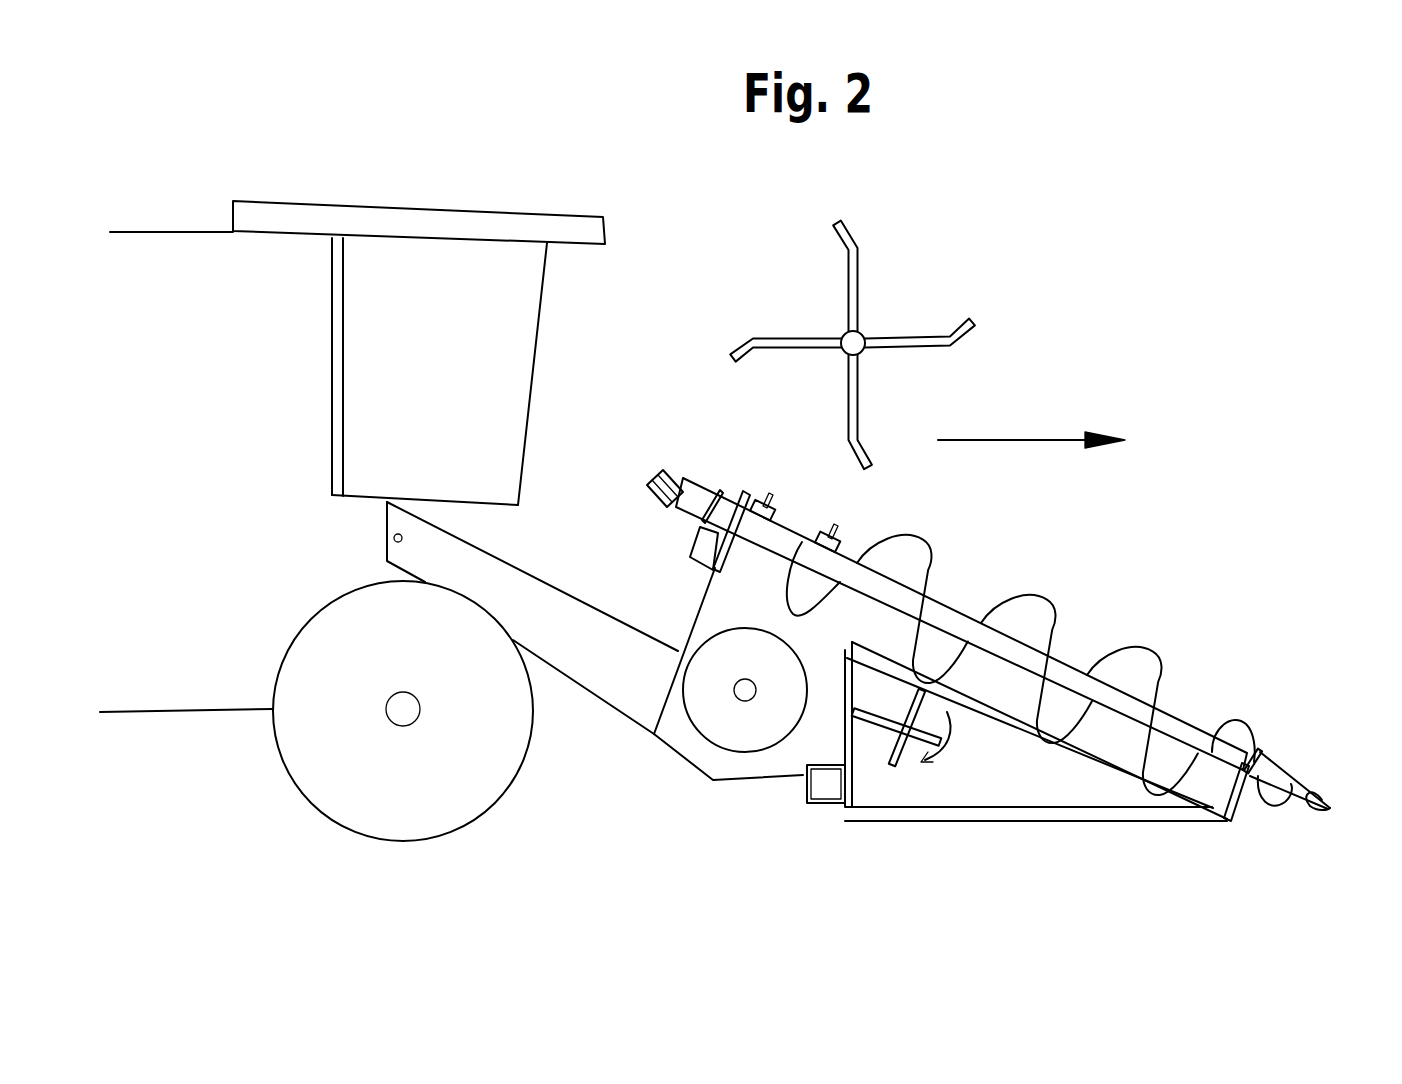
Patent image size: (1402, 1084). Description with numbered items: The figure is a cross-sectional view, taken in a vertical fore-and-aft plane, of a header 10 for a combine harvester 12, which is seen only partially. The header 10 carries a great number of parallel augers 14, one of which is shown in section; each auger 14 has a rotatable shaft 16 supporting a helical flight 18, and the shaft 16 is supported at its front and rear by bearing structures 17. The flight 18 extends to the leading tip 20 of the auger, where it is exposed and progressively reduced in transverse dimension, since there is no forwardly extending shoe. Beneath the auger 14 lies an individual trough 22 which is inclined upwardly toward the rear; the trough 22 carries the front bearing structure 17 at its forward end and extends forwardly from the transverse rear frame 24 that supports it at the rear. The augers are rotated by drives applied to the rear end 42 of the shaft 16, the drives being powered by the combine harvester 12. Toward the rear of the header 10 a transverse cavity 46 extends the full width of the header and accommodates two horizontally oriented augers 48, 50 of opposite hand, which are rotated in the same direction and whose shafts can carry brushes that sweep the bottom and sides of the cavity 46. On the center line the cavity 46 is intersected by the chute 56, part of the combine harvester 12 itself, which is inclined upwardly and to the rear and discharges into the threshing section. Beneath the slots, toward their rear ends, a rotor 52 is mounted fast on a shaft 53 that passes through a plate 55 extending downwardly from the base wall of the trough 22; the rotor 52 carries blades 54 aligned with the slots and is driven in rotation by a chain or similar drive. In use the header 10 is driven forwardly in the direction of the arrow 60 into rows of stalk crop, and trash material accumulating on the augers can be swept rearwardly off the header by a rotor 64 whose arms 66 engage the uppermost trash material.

The header 10 is at (1106, 604).
The combine harvester 12 is at (556, 396).
The auger 14 is at (967, 600).
The rotatable shaft 16 is at (963, 620).
The bearing structure 17 is at (750, 478).
The flight 18 is at (1140, 667).
The leading tip 20 is at (1330, 813).
The trough 22 is at (1004, 733).
The transverse rear frame 24 is at (826, 815).
The rear end of auger shaft 42 is at (665, 497).
The transverse cavity 46 is at (757, 765).
The horizontally oriented auger 48 is at (706, 746).
The horizontally oriented auger 50 is at (684, 651).
The rotor 52 is at (906, 762).
The shaft 53 is at (903, 715).
The blade 54 is at (890, 732).
The plate 55 is at (1054, 782).
The chute 56 is at (612, 677).
The arrow 60 is at (1031, 423).
The rotor 64 is at (883, 307).
The arm 66 is at (842, 248).